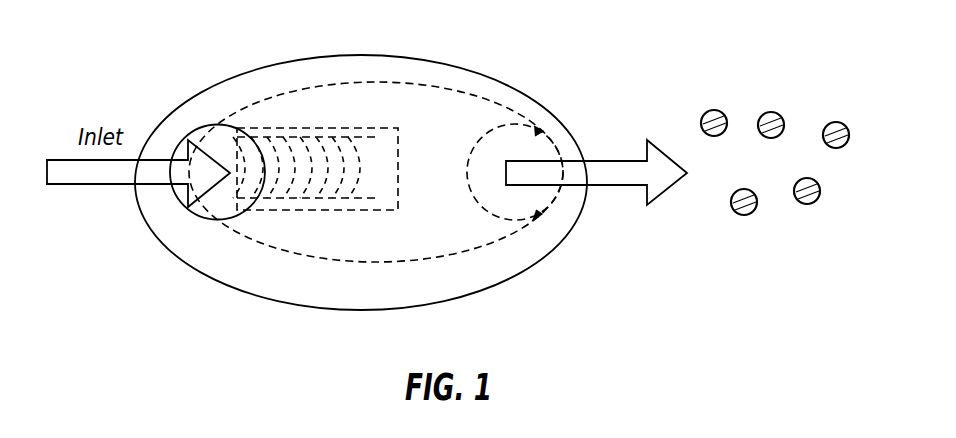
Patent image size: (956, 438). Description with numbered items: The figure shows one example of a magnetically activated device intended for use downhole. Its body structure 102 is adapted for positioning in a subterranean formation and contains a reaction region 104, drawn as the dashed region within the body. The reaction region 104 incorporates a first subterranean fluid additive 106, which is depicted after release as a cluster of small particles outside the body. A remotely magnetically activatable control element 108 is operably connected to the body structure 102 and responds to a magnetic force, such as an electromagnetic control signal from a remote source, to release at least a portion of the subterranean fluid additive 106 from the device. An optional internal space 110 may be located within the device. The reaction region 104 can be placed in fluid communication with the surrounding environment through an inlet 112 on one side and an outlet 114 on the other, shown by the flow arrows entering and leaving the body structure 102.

The body structure 102 is at (413, 57).
The reaction region 104 is at (280, 188).
The first subterranean fluid additive 106 is at (837, 122).
The remotely magnetically activatable control element 108 is at (292, 127).
The internal space 110 is at (210, 202).
The inlet 112 is at (218, 122).
The outlet 114 is at (524, 124).